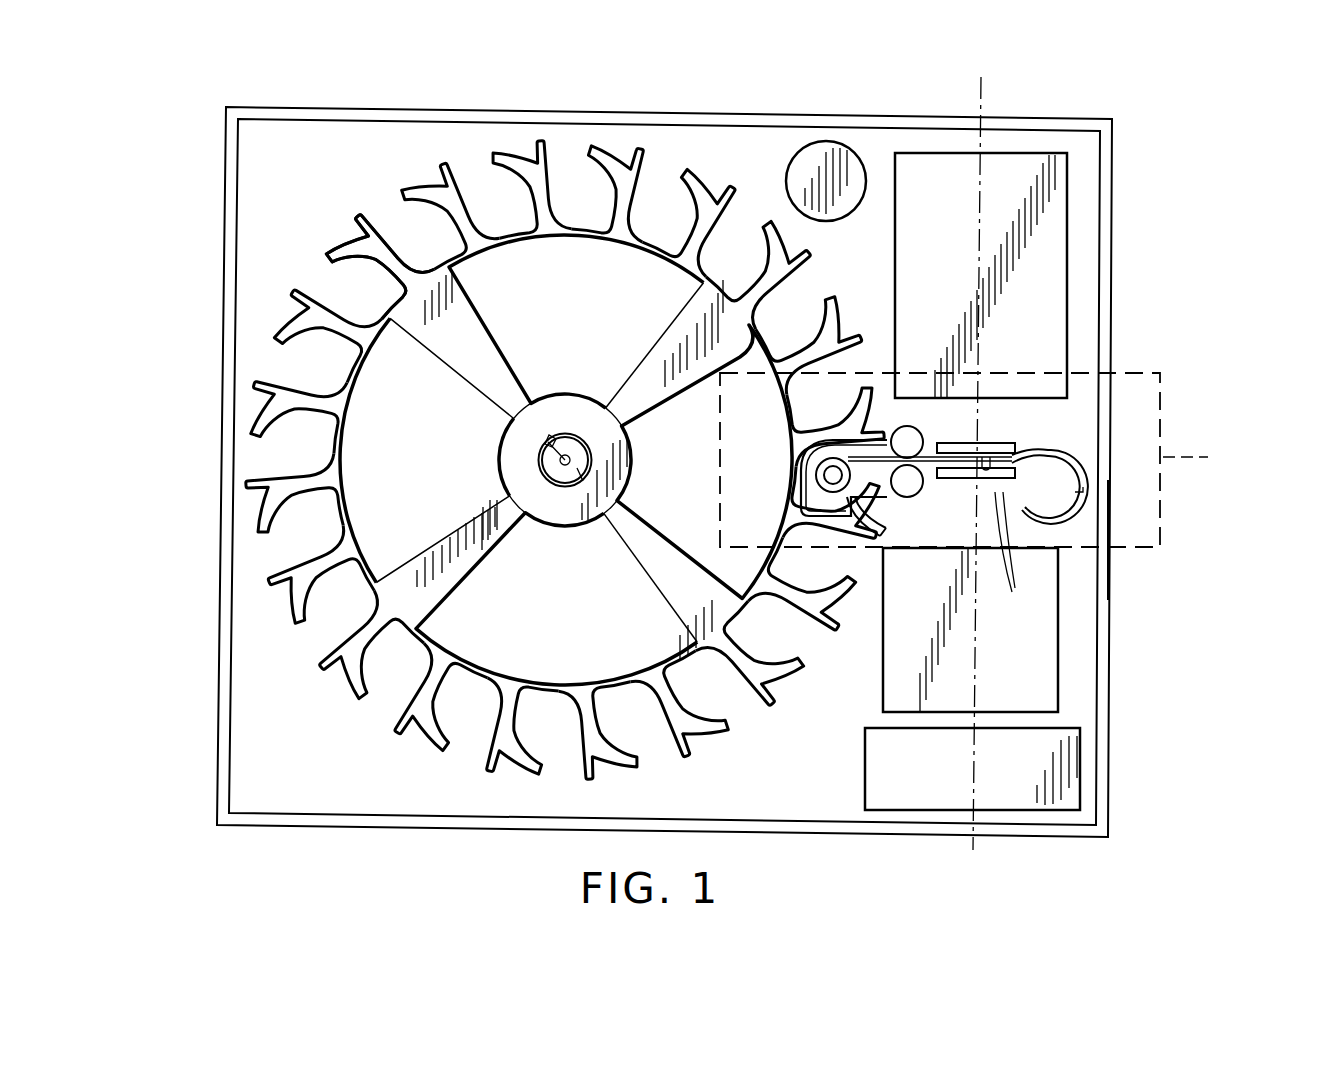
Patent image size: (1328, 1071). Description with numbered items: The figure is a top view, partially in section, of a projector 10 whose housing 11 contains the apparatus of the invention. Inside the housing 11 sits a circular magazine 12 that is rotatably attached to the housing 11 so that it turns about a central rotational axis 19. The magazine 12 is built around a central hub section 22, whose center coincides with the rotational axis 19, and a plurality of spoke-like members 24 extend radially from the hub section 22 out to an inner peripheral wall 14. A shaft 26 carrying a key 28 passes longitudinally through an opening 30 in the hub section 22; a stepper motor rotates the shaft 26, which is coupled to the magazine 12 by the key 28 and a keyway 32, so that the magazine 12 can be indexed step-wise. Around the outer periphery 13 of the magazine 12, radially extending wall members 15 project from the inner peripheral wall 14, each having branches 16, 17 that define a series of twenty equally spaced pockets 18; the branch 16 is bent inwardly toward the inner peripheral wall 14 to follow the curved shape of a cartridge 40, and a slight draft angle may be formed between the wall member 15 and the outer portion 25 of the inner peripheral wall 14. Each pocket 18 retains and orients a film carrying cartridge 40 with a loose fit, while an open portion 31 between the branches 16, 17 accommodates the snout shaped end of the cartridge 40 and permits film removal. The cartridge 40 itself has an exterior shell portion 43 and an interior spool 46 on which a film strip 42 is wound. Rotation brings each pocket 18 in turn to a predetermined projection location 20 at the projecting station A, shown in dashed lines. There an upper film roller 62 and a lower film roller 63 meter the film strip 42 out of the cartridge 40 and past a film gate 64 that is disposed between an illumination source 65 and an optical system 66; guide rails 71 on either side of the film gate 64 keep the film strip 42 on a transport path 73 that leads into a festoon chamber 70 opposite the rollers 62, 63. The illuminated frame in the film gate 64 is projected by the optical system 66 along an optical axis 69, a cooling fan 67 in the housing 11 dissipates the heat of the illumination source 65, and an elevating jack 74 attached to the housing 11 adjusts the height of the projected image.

The projector 10 is at (1114, 106).
The housing 11 is at (388, 110).
The magazine 12 is at (575, 237).
The outer periphery 13 is at (356, 211).
The inner peripheral wall 14 is at (588, 687).
The wall member 15 is at (495, 195).
The branch 16 is at (290, 303).
The branch 17 is at (290, 333).
The pocket 18 is at (410, 233).
The rotational axis 19 is at (508, 442).
The projection location 20 is at (790, 442).
The hub section 22 is at (497, 466).
The spoke-like members 24 is at (647, 363).
The outer portion of inner peripheral wall 25 is at (345, 296).
The shaft 26 is at (613, 477).
The key 28 is at (620, 450).
The opening 30 is at (553, 474).
The keyway 32 is at (563, 420).
The open portion 31 is at (728, 712).
The cartridge 40 is at (803, 478).
The film strip 42 is at (1027, 460).
The exterior shell portion 43 is at (845, 428).
The interior spool 46 is at (833, 497).
The upper film roller 62 is at (912, 432).
The lower film roller 63 is at (912, 499).
The film gate 64 is at (990, 460).
The illumination source 65 is at (1060, 690).
The optical system 66 is at (1065, 232).
The cooling fan 67 is at (1068, 775).
The optical axis 69 is at (990, 96).
The festoon chamber 70 is at (1112, 520).
The guide rails 71 is at (1008, 578).
The transport path 73 is at (1202, 454).
The elevating jack 74 is at (826, 185).
The projecting station A is at (1165, 410).